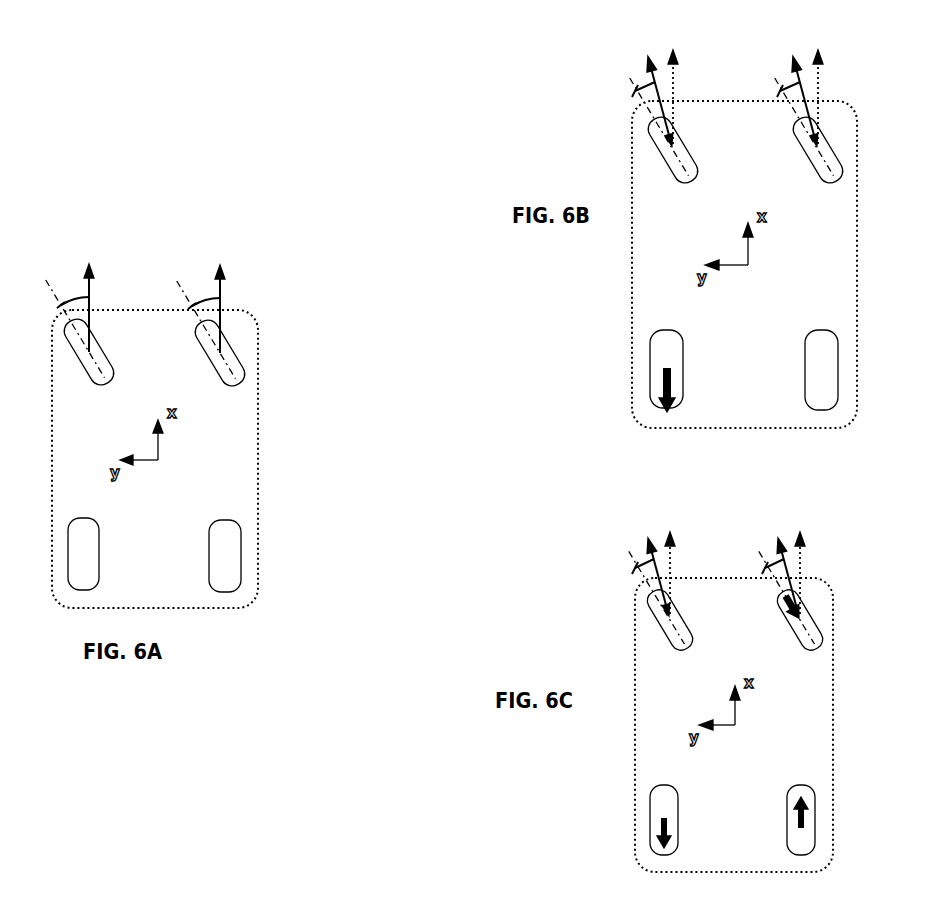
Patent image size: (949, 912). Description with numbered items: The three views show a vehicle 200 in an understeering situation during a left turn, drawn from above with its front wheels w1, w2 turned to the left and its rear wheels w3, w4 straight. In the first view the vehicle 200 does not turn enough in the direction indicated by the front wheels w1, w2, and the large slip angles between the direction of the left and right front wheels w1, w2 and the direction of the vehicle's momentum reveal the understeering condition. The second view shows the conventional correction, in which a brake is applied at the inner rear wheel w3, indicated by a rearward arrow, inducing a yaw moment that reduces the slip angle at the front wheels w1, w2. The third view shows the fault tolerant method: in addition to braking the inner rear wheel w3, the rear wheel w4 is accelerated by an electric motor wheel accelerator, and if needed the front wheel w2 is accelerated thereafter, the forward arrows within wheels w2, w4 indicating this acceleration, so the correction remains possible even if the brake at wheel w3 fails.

In FIG. 6A, the vehicle 200 is at (262, 452).
In FIG. 6B, the vehicle 200 is at (857, 276).
In FIG. 6C, the vehicle 200 is at (836, 697).
In FIG. 6A, the left front wheel w1 is at (104, 338).
In FIG. 6B, the left front wheel w1 is at (688, 132).
In FIG. 6C, the left front wheel w1 is at (686, 615).
In FIG. 6A, the right front wheel w2 is at (205, 367).
In FIG. 6B, the right front wheel w2 is at (804, 162).
In FIG. 6C, the right front wheel w2 is at (786, 634).
In FIG. 6A, the inner rear wheel w3 is at (99, 542).
In FIG. 6B, the inner rear wheel w3 is at (683, 352).
In FIG. 6C, the inner rear wheel w3 is at (678, 817).
In FIG. 6A, the rear wheel w4 is at (209, 555).
In FIG. 6B, the rear wheel w4 is at (805, 358).
In FIG. 6C, the rear wheel w4 is at (787, 820).